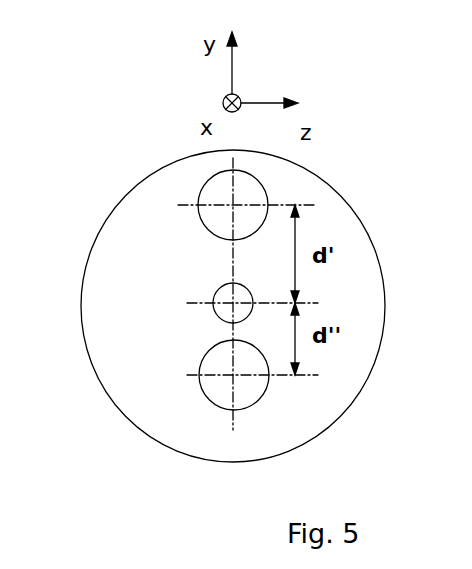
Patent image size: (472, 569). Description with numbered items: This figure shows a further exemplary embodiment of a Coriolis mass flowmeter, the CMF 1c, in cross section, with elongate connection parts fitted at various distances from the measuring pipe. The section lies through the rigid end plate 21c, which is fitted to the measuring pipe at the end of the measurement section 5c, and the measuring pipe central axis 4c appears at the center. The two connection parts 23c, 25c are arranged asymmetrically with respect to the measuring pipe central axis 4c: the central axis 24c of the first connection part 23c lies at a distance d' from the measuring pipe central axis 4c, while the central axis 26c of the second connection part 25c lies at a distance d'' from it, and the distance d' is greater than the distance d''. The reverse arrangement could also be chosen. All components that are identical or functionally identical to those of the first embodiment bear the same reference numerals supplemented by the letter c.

The CMF 1c is at (65, 308).
The measuring pipe central axis 4c is at (233, 298).
The measurement section 5c is at (207, 300).
The end plate 21c is at (352, 202).
The first connection part 23c is at (202, 218).
The central axis of the first connection part 24c is at (225, 207).
The second connection part 25c is at (222, 397).
The central axis of the second connection part 26c is at (237, 377).